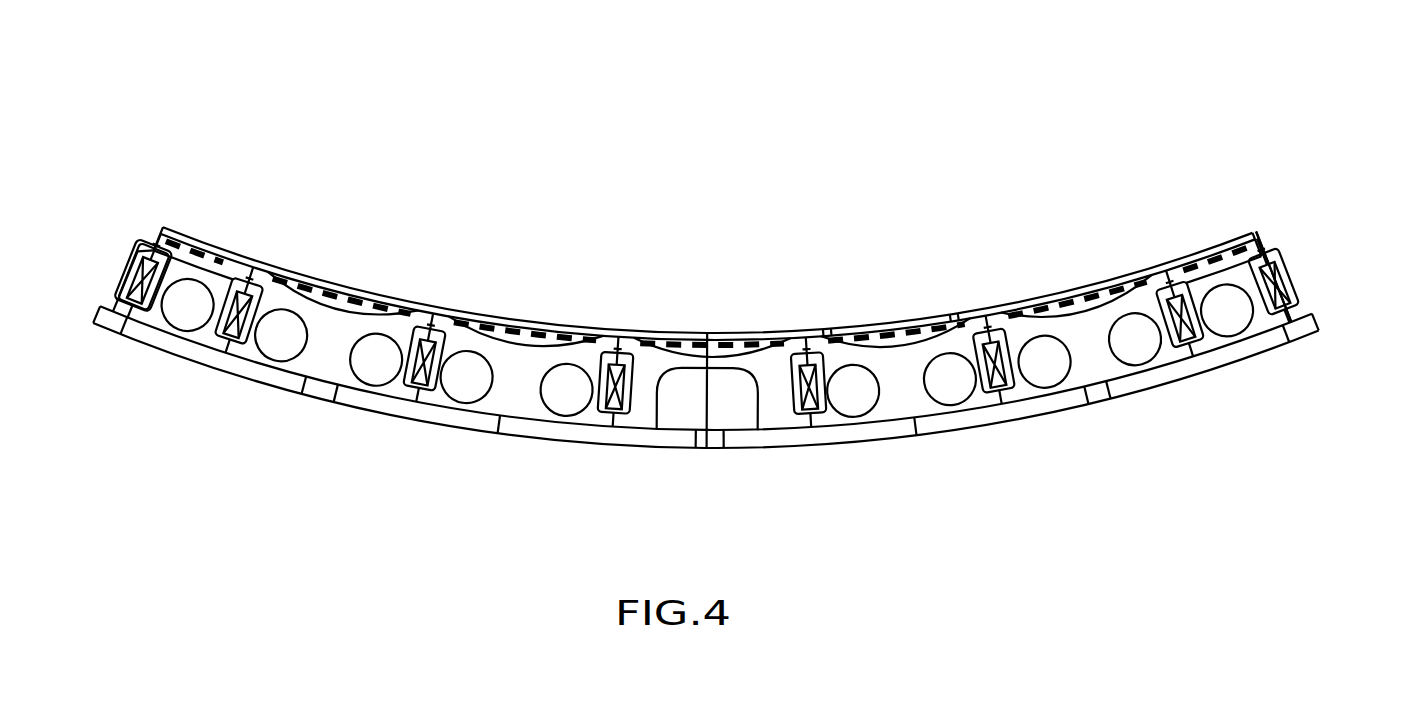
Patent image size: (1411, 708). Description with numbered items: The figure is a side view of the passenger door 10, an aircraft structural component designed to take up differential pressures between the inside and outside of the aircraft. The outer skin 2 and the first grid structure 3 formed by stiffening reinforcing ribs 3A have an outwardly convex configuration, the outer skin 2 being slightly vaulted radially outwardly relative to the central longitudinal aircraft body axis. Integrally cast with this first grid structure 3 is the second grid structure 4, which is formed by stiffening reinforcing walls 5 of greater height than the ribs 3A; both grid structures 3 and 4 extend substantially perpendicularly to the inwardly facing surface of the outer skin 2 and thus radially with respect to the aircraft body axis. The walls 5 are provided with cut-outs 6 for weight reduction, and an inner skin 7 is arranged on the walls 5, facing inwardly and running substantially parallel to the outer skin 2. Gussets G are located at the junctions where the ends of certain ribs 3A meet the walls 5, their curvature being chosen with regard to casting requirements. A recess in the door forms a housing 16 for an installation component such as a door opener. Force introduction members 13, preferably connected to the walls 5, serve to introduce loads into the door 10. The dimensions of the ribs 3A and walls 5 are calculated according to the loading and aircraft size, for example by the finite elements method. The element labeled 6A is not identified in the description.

The outer skin 2 is at (515, 437).
The first grid structure 3 is at (1328, 326).
The stiffening reinforcing ribs 3A is at (638, 440).
The second grid structure 4 is at (1294, 285).
The stiffening reinforcing walls 5 is at (325, 347).
The cut-outs 6 is at (368, 343).
The segment web 6A is at (367, 385).
The inner skin 7 is at (983, 325).
The door 10 is at (883, 160).
The force introduction members 13 is at (136, 256).
The housing 16 is at (737, 410).
The gussets G is at (831, 338).